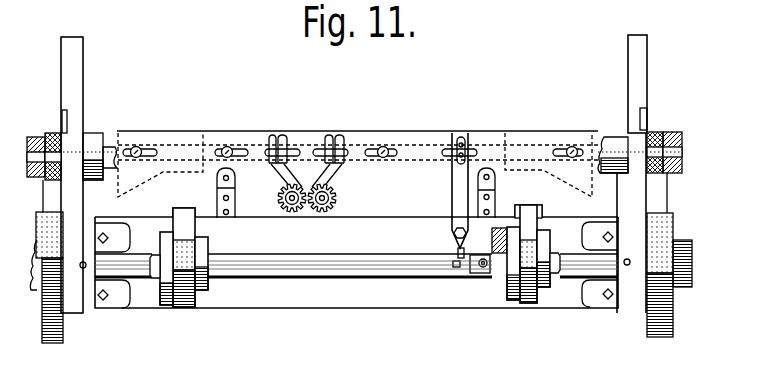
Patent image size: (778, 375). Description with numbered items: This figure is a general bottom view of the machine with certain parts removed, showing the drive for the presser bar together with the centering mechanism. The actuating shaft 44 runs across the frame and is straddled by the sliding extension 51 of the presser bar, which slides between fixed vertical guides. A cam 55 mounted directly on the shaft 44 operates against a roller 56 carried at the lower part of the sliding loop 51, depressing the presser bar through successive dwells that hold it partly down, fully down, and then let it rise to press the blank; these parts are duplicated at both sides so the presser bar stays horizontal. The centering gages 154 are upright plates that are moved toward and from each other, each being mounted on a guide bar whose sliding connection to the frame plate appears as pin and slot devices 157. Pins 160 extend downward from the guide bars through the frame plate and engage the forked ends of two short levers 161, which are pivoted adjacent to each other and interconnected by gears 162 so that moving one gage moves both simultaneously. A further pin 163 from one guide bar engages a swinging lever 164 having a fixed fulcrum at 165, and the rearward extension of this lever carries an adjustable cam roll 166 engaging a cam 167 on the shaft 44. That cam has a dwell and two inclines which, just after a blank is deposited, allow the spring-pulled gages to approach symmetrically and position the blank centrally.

The actuating shaft 44 is at (347, 262).
The sliding extension 51 is at (166, 303).
The cam 55 is at (186, 309).
The roller 56 is at (209, 289).
The centering gage 154 is at (149, 191).
The pin and slot devices 157 is at (138, 147).
The pins 160 is at (275, 137).
The short levers 161 is at (282, 173).
The gears 162 is at (279, 199).
The pin 163 is at (461, 140).
The swinging lever 164 is at (453, 186).
The fixed fulcrum 165 is at (454, 233).
The cam roll 166 is at (473, 282).
The cam 167 is at (500, 303).